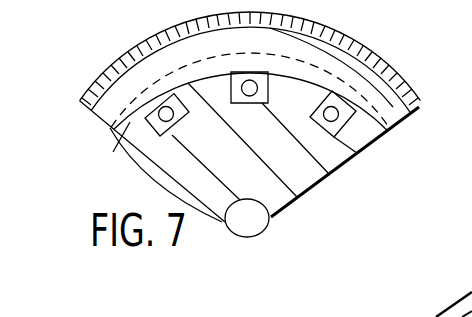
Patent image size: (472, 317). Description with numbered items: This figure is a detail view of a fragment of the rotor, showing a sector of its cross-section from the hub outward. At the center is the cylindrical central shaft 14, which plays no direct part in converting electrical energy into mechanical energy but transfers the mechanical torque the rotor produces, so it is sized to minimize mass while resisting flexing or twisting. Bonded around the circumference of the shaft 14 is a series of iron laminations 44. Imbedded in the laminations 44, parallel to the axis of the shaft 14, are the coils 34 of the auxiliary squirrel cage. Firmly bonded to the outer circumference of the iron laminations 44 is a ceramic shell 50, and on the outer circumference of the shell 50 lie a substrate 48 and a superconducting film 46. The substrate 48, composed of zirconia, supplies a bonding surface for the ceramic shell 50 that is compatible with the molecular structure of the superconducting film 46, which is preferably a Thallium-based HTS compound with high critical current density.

The central shaft 14 is at (273, 221).
The coils of the auxiliary squirrel cage 34 is at (128, 155).
The iron laminations 44 is at (336, 156).
The superconducting film 46 is at (122, 58).
The substrate 48 is at (84, 112).
The ceramic shell 50 is at (392, 124).